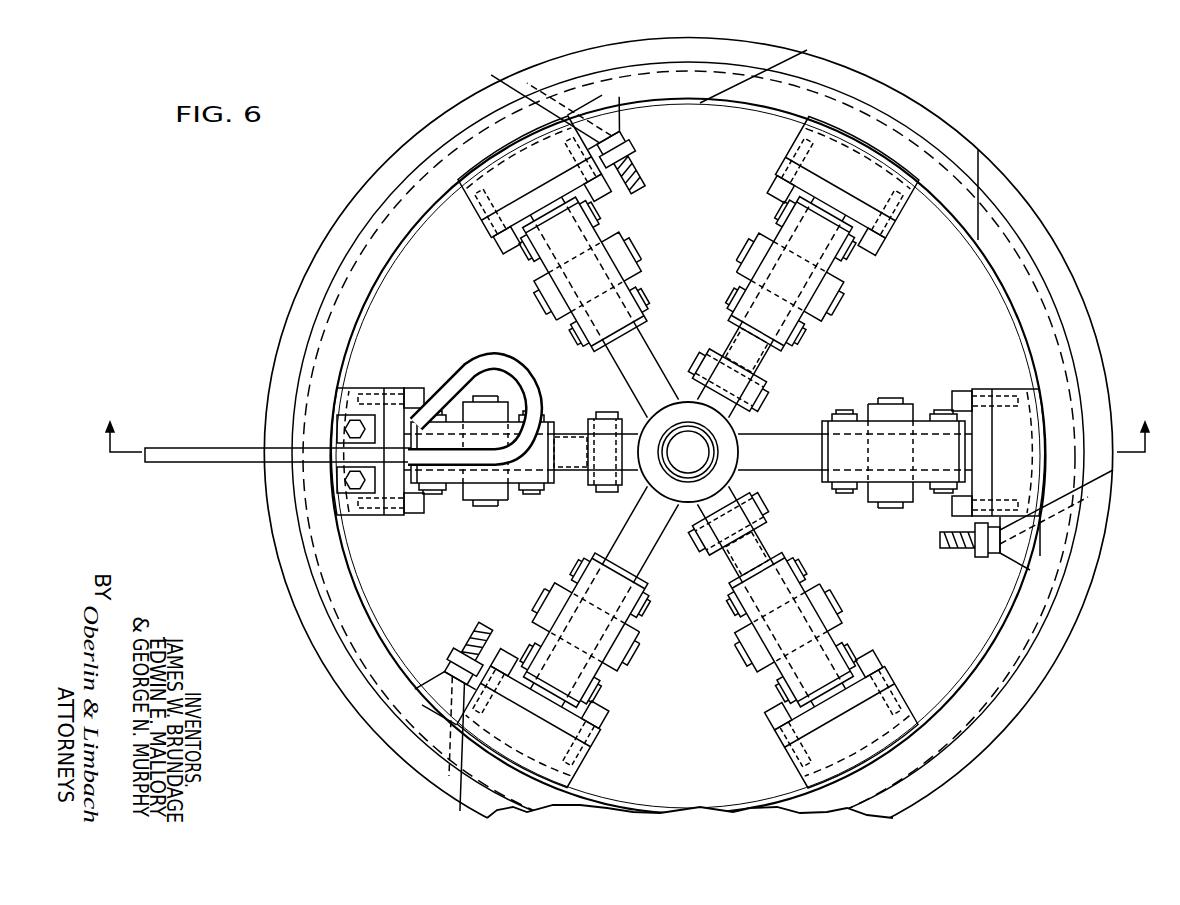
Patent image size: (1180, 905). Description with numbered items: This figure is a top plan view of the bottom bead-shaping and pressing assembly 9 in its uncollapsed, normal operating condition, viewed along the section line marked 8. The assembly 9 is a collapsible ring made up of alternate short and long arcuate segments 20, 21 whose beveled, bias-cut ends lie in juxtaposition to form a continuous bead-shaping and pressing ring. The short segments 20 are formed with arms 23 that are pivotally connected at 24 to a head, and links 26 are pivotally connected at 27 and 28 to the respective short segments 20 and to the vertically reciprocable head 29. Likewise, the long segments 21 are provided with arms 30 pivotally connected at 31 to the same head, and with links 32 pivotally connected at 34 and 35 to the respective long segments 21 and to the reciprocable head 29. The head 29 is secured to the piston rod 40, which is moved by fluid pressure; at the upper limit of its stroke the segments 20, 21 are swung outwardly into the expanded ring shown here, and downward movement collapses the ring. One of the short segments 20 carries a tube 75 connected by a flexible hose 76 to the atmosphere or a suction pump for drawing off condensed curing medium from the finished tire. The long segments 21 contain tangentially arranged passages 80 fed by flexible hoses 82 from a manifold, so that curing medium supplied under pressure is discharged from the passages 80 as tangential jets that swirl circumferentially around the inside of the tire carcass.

The section line 8- 8 is at (632, 452).
The bottom bead-pressing assembly 9 is at (797, 566).
The short arcuate segments 20 is at (940, 118).
The long arcuate segments 21 is at (330, 234).
The arms 23 is at (838, 245).
The pivotal connection 24 is at (832, 302).
The links 26 is at (790, 346).
The pivotal connection 27 is at (782, 212).
The pivotal connection 28 is at (702, 368).
The vertically reciprocable head 29 is at (678, 492).
The arms 30 is at (964, 471).
The pivotal connection 31 is at (894, 505).
The links 32 is at (922, 492).
The pivotal connection 34 is at (963, 500).
The pivotal connection 35 is at (846, 492).
The piston rod 40 is at (704, 451).
The tube 75 is at (274, 453).
The flexible hose 76 is at (468, 366).
The tangentially arranged passages 80 is at (1088, 506).
The flexible hoses 82 is at (962, 550).